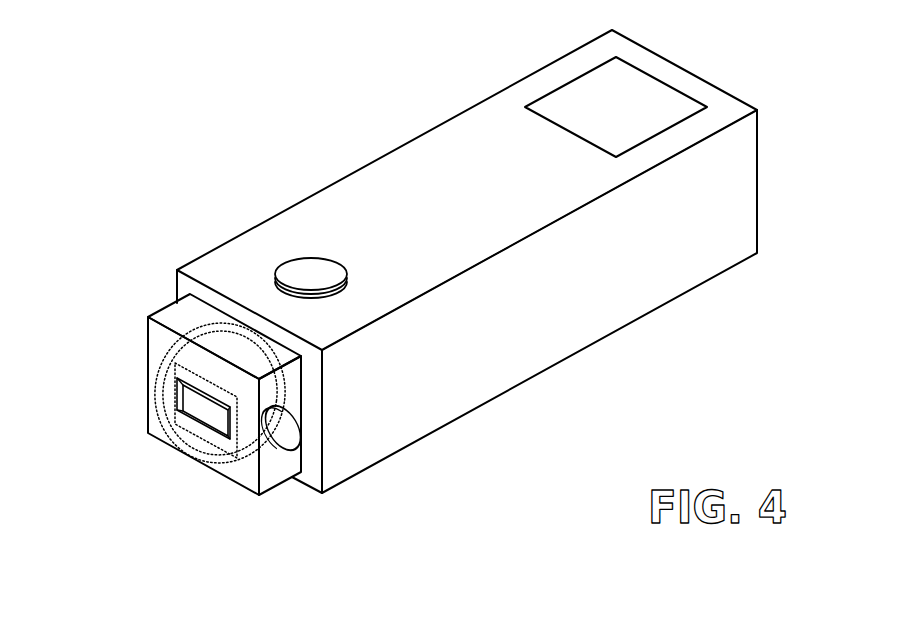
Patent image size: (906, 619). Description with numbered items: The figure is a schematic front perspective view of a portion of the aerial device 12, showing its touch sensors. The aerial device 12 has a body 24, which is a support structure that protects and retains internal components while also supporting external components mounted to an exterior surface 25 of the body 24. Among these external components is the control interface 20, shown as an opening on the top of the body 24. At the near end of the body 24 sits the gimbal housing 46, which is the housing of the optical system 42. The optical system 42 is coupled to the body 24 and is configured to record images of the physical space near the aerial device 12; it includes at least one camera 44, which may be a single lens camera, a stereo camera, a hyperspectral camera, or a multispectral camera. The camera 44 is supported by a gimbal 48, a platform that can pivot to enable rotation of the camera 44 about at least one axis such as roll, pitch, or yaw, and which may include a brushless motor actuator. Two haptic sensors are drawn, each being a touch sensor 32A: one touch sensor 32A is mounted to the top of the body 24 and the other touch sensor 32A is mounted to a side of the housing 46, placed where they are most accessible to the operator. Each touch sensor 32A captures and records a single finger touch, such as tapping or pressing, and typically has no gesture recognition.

The aerial device 12 is at (384, 145).
The control interface 20 is at (643, 100).
The body 24 is at (710, 257).
The exterior surface 25 is at (487, 227).
The touch sensor 32A is at (308, 275).
The optical system 42 is at (163, 395).
The camera 44 is at (206, 410).
The gimbal housing 46 is at (237, 475).
The gimbal 48 is at (282, 381).